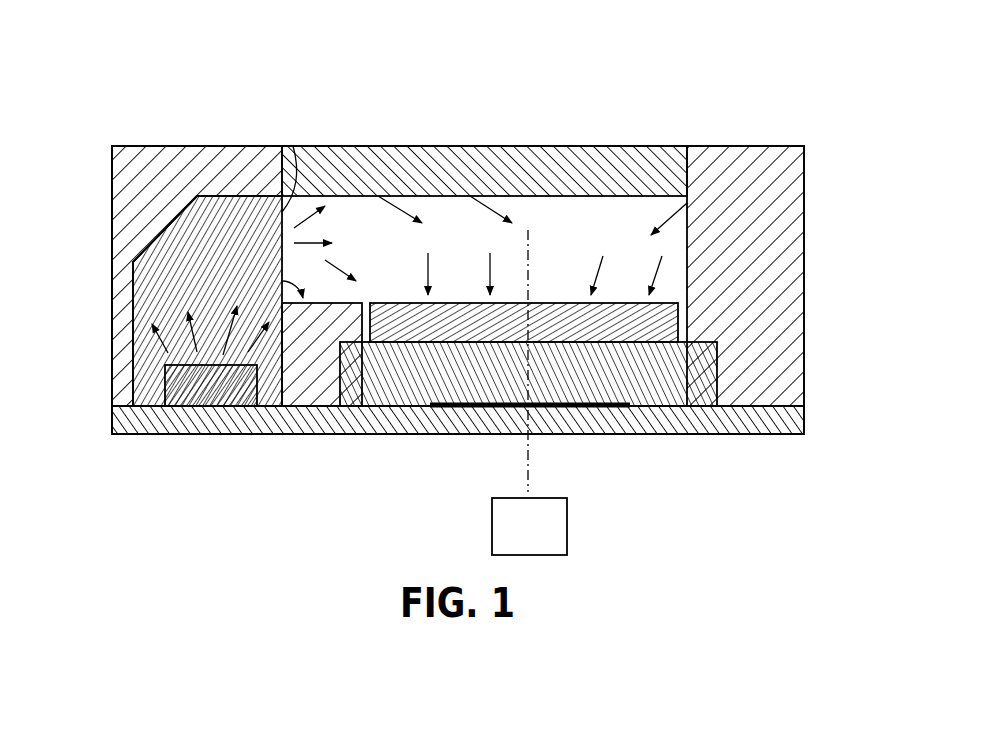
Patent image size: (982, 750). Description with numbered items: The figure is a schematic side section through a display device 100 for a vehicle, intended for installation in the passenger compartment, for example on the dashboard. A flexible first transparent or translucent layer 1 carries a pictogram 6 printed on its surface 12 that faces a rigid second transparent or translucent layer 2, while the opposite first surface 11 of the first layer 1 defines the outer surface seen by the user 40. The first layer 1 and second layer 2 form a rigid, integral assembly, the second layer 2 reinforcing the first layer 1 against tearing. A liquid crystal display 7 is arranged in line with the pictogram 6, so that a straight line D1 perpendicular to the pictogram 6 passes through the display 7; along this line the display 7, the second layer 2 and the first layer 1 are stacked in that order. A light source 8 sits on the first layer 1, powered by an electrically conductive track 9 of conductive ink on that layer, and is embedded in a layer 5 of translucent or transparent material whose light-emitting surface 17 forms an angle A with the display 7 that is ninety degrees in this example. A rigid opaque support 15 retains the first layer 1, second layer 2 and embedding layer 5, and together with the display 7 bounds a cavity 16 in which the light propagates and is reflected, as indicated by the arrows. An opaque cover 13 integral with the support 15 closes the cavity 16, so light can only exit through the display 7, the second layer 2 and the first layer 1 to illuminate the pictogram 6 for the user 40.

The display device 100 is at (482, 110).
The first transparent or translucent layer 1 is at (680, 423).
The first surface 11 is at (133, 433).
The surface 12 is at (125, 404).
The opaque support 15 is at (140, 187).
The layer of translucent or transparent material 5 is at (165, 268).
The light source 8 is at (213, 385).
The electrically conductive track 9 is at (275, 402).
The cover 13 is at (633, 165).
The light-emitting surface 17 is at (293, 146).
The cavity 16 is at (675, 259).
The liquid crystal display 7 is at (622, 320).
The second transparent or translucent layer 2 is at (695, 363).
The pictogram 6 is at (583, 408).
The user 40 is at (529, 526).
The angle A is at (300, 279).
The straight line D1 is at (525, 455).